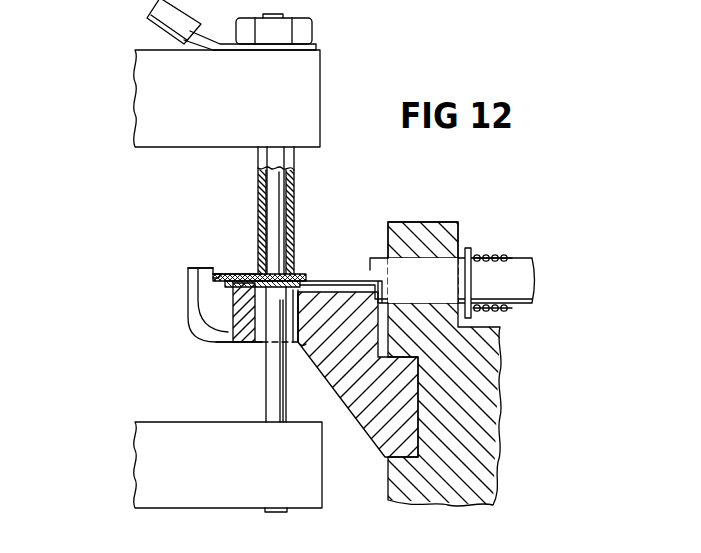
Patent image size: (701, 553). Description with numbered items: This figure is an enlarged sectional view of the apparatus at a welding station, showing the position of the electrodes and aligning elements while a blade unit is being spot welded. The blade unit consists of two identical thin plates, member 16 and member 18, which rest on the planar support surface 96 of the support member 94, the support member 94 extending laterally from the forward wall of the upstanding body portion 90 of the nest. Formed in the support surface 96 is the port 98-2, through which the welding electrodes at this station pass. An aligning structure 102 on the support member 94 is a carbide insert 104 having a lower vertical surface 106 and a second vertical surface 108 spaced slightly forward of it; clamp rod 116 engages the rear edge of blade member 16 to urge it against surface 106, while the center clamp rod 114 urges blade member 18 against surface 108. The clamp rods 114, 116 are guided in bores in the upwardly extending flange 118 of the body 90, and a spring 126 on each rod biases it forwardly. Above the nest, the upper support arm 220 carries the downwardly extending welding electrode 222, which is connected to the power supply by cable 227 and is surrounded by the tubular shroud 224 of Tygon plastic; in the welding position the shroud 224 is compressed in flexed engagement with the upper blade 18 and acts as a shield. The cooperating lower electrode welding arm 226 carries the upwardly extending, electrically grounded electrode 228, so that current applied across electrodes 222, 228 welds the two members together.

The member 16 is at (238, 308).
The member 18 is at (251, 274).
The body portion 90 is at (393, 473).
The support member 94 is at (363, 412).
The support surface 96 is at (242, 343).
The port 98-2 is at (300, 346).
The aligning structure 102 is at (184, 290).
The carbide insert 104 is at (217, 293).
The lower vertical surface 106 is at (228, 275).
The second vertical surface 108 is at (213, 266).
The clamp rod 114 is at (303, 272).
The clamp rod 116 is at (333, 286).
The upwardly extending flange 118 is at (425, 228).
The spring 126 is at (490, 256).
The upper support arm 220 is at (165, 133).
The welding electrode 222 is at (268, 180).
The tubular shroud 224 is at (296, 196).
The lower electrode welding arm 226 is at (153, 433).
The cable 227 is at (143, 19).
The electrode 228 is at (273, 385).